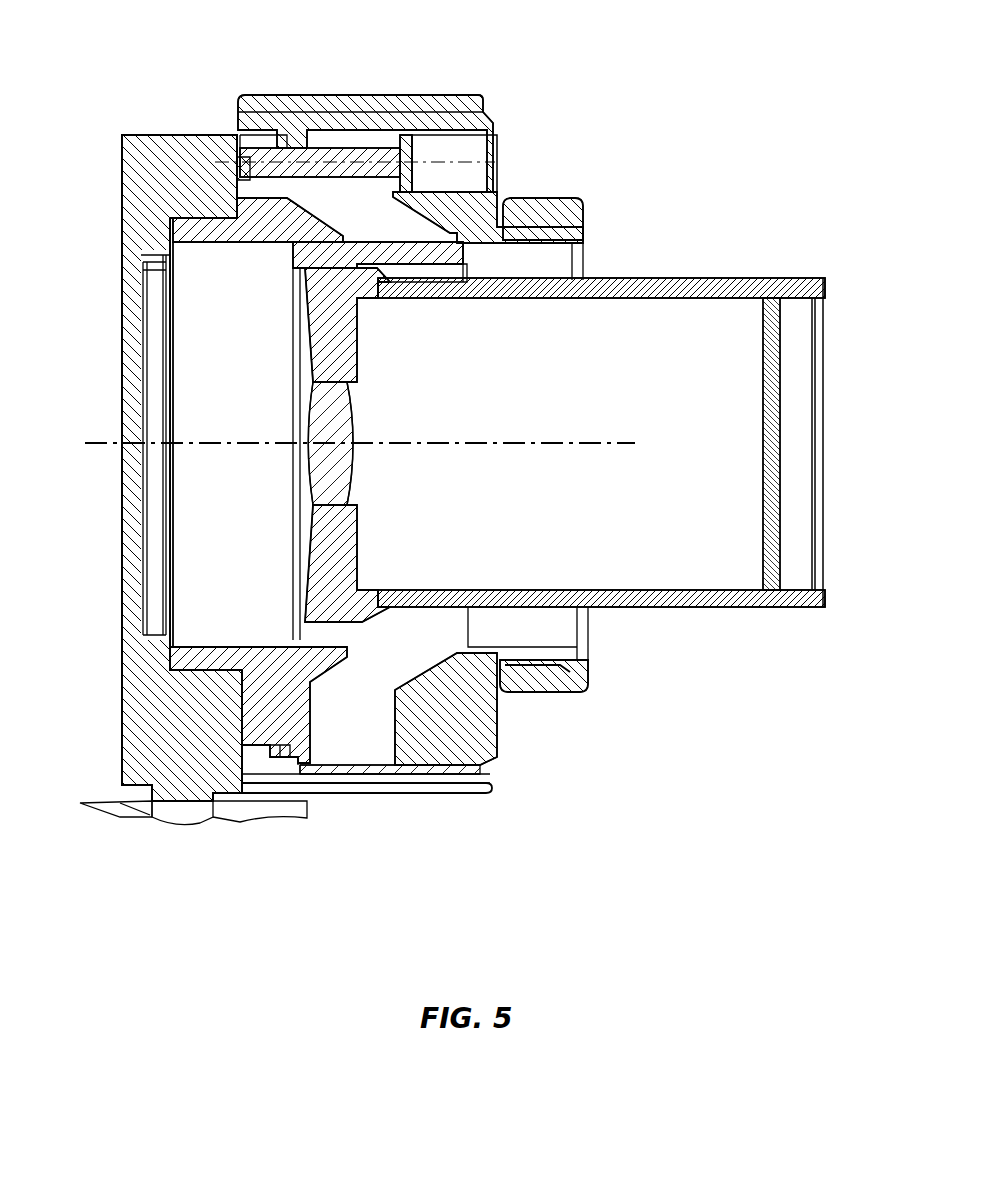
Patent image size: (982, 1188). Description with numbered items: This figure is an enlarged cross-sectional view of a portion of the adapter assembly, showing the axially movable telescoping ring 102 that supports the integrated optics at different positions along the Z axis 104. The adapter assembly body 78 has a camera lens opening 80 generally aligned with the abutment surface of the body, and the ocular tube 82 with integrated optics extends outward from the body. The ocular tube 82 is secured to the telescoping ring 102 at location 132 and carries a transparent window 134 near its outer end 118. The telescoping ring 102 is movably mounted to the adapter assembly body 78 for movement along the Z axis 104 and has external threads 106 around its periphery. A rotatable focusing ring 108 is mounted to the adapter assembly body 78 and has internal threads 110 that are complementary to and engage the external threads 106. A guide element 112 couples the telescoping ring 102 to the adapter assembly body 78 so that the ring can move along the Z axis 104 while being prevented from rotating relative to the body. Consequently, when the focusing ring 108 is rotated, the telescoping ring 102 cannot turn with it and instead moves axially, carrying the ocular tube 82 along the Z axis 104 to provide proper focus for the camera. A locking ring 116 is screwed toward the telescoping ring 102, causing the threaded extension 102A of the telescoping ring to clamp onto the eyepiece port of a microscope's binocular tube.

The adapter assembly body 78 is at (182, 228).
The camera lens opening 80 is at (134, 381).
The ocular tube 82 is at (648, 278).
The telescoping ring 102 is at (465, 735).
The threaded extension 102A is at (556, 652).
The Z axis 104 is at (603, 428).
The external threads 106 is at (470, 773).
The focusing ring 108 is at (430, 792).
The internal threads 110 is at (358, 777).
The guide element 112 is at (368, 147).
The locking ring 116 is at (540, 197).
The outer end 118 is at (816, 453).
The location 132 is at (322, 266).
The transparent window 134 is at (772, 516).